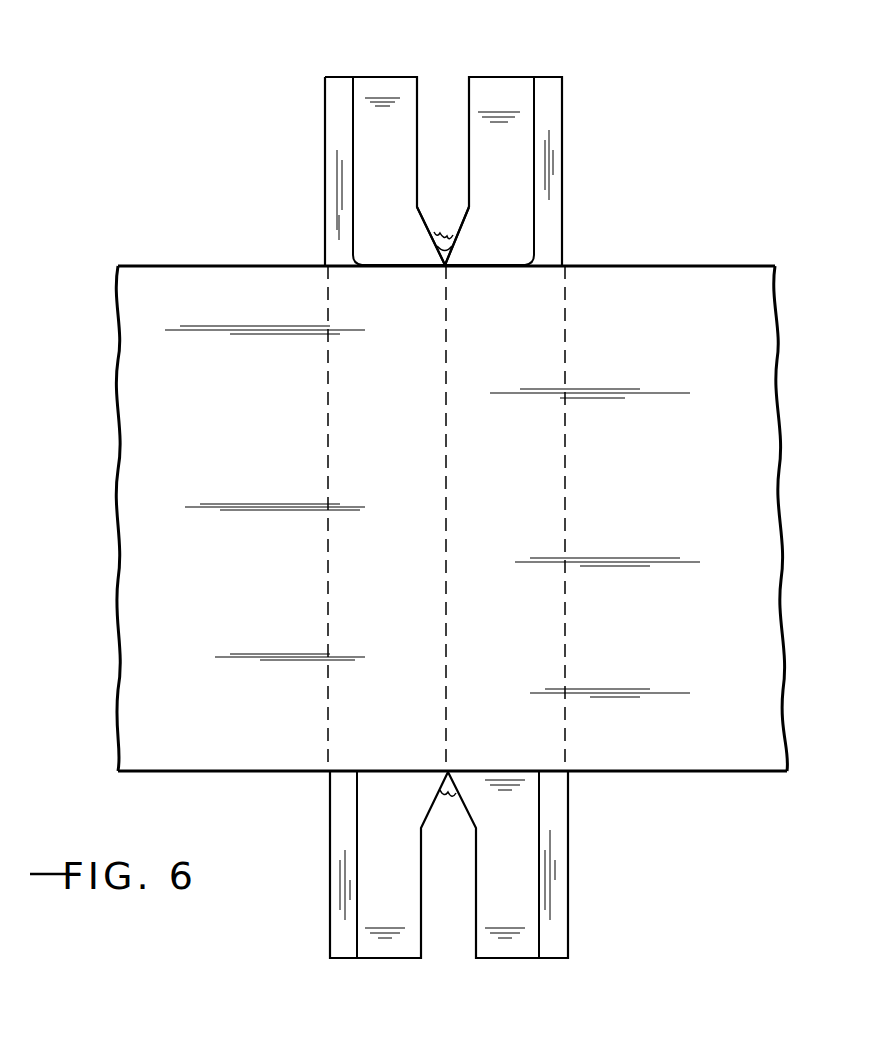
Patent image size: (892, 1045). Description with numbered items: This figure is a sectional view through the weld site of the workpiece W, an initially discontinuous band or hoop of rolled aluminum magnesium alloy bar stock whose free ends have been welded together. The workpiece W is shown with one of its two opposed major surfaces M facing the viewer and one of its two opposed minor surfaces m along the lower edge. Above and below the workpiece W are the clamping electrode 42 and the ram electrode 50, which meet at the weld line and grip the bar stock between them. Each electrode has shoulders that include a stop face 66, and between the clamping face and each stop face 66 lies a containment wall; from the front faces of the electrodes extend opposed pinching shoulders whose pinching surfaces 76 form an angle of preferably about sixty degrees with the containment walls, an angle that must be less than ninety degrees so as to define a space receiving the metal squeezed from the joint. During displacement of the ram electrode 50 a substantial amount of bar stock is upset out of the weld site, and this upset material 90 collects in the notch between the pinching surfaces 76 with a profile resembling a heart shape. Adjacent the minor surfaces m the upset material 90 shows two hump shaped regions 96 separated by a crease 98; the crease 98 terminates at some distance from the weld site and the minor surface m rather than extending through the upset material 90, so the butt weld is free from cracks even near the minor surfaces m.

The electrode 42 is at (382, 77).
The ram electrode 50 is at (503, 77).
The stop face 66 is at (400, 172).
The pinching surface 76 is at (426, 226).
The hump shaped region 96 is at (437, 232).
The crease 98 is at (452, 243).
The upset material 90 is at (449, 802).
The major surface M is at (672, 505).
The workpiece W is at (262, 785).
The minor surface m is at (633, 771).